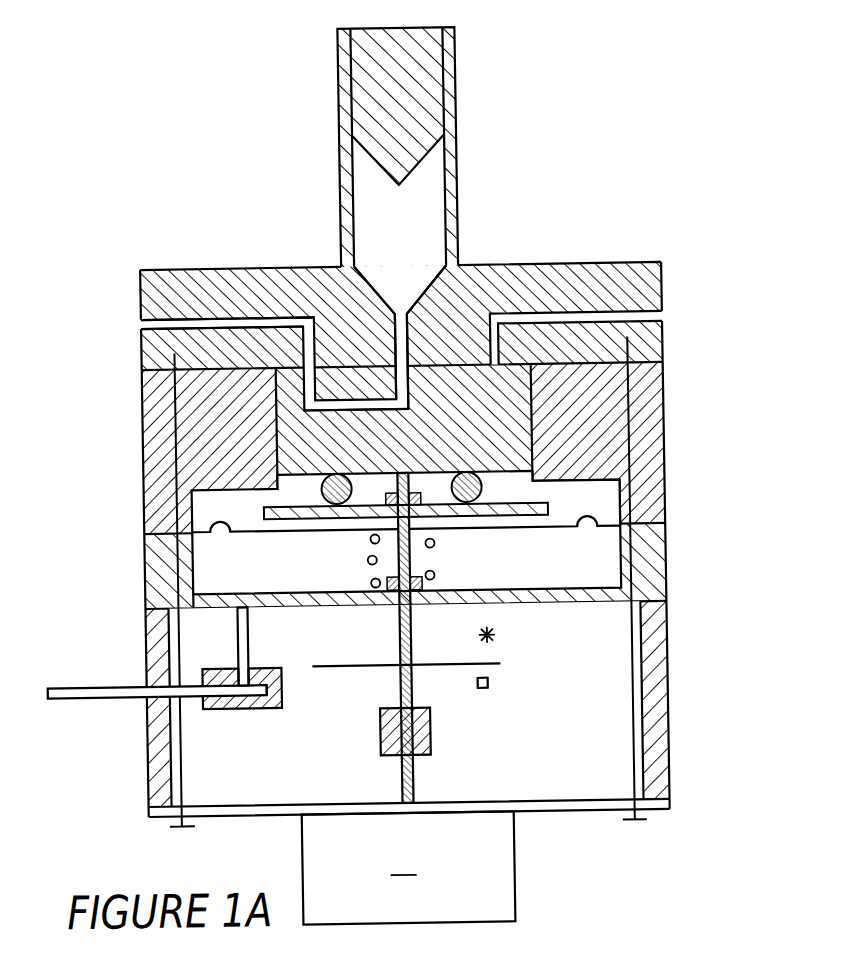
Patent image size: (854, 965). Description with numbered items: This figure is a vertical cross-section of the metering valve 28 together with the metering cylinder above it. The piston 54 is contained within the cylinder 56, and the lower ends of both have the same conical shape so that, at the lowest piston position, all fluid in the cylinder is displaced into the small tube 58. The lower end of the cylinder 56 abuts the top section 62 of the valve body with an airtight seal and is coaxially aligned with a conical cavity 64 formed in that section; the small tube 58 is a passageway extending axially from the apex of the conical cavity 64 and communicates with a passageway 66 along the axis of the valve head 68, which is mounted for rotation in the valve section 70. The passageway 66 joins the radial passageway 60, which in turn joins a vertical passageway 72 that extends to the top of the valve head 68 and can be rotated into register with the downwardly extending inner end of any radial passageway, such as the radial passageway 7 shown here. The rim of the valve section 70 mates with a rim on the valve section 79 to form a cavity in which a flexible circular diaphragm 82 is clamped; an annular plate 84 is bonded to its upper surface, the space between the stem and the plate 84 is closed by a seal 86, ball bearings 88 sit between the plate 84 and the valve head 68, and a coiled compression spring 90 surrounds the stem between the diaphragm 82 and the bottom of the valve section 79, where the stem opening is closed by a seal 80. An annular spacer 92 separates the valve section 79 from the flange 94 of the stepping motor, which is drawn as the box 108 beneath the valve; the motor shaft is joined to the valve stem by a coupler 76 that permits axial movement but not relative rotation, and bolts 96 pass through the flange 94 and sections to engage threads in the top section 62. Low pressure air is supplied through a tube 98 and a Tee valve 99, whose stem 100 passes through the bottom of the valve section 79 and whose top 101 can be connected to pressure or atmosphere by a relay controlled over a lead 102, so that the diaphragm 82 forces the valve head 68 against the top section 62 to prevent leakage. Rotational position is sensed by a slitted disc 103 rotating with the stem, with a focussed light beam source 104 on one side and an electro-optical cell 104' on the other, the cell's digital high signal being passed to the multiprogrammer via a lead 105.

The piston 54 is at (437, 28).
The cylinder 56 is at (462, 150).
The valve 28 is at (590, 165).
The top section of the valve body 62 is at (590, 266).
The conical cavity 64 is at (389, 289).
The radial passageway 7 is at (665, 320).
The small tube 58 is at (411, 333).
The vertical passageway 72 is at (316, 386).
The passageway 66 is at (410, 386).
The valve head 68 is at (277, 402).
The passageway 60 is at (345, 418).
The bolts 96 is at (630, 394).
The valve section 70 is at (665, 430).
The ball bearings 88 is at (340, 478).
The seal 86 is at (421, 498).
The annular plate 84 is at (276, 508).
The flexible circular diaphragm 82 is at (535, 530).
The valve section 79 is at (665, 558).
The coiled compression spring 90 is at (434, 545).
The seal 80 is at (383, 572).
The annular spacer 92 is at (665, 650).
The stem of the Tee valve 100 is at (246, 630).
The lead 102 is at (236, 668).
The disc 103 is at (322, 665).
The focussed light beam source 104 is at (523, 637).
The lead 105 is at (490, 684).
The electro-optical cell 104' is at (514, 702).
The tube 98 is at (100, 694).
The top of the Tee 101 is at (222, 706).
The Tee valve 99 is at (268, 707).
The coupler 76 is at (427, 745).
The flange 94 is at (552, 815).
The motor M2 108 is at (509, 905).